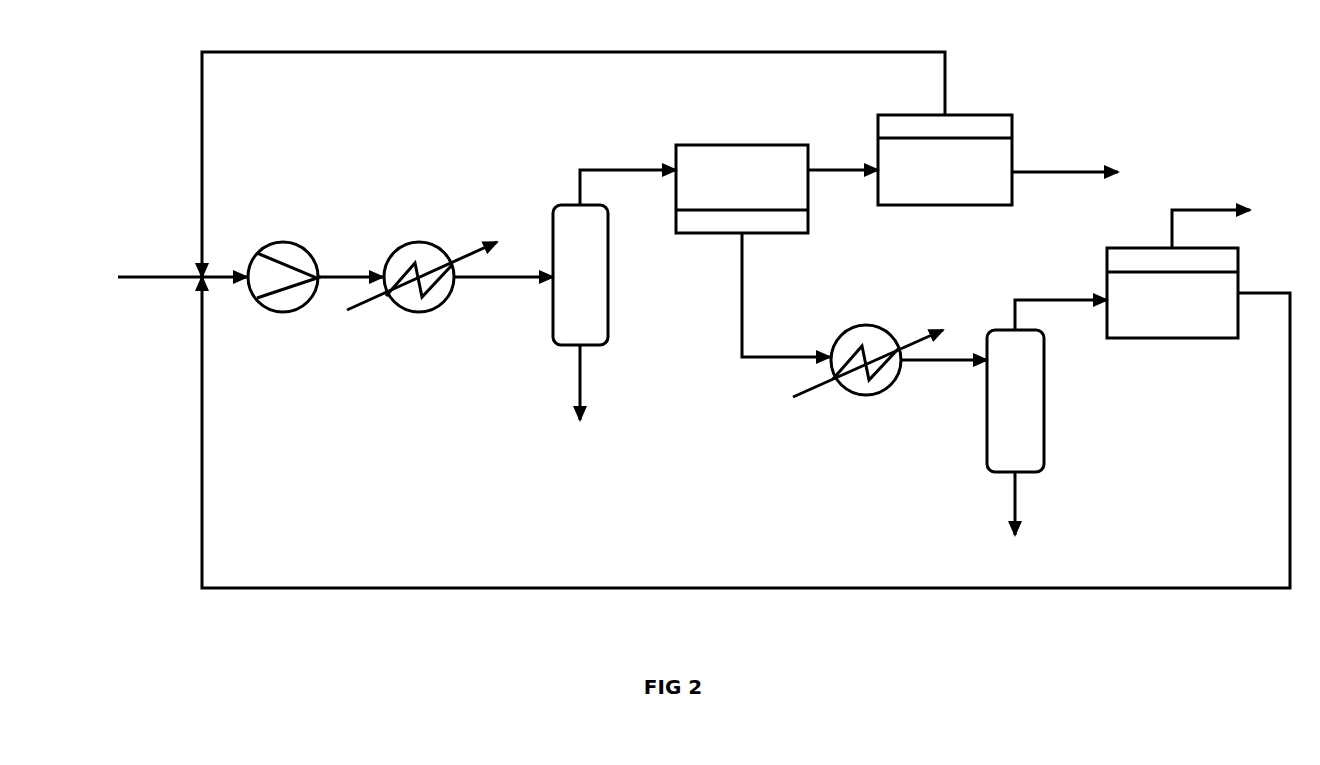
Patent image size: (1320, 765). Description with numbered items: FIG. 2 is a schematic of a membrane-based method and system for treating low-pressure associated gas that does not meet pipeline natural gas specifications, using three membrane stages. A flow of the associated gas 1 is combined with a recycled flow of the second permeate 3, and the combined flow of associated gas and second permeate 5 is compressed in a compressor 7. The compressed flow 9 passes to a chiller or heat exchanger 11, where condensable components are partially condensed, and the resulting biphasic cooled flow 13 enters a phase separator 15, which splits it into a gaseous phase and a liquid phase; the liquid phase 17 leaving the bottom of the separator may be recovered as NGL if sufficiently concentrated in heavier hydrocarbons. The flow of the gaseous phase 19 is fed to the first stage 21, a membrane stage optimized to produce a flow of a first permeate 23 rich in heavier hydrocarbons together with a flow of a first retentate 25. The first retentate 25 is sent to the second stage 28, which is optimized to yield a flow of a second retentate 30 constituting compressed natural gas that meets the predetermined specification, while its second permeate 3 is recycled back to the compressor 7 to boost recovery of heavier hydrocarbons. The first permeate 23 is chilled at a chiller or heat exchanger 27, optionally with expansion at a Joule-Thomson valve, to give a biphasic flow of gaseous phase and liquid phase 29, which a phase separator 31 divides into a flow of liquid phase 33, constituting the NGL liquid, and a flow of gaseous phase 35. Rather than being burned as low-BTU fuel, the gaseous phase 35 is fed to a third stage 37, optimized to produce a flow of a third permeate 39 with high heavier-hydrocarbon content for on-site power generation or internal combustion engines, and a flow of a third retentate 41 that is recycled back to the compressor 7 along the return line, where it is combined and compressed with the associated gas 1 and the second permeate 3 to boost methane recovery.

The flow of associated gas 1 is at (153, 277).
The flow of second permeate 3 is at (520, 52).
The combined flow of associated gas and second permeate 5 is at (223, 279).
The compressor 7 is at (290, 297).
The compressed flow 9 is at (350, 277).
The chiller or heat exchanger 11 is at (433, 290).
The biphasic cooled flow 13 is at (503, 278).
The phase separator 15 is at (583, 282).
The bottoms stream 17 is at (584, 378).
The flow of gaseous phase 19 is at (618, 170).
The first stage 21 is at (720, 173).
The flow of first permeate 23 is at (740, 318).
The flow of first retentate 25 is at (837, 165).
The chiller or heat exchanger 27 is at (860, 382).
The second stage 28 is at (947, 182).
The biphasic flow of gaseous phase and liquid phase 29 is at (937, 363).
The flow of second retentate 30 is at (1042, 172).
The phase separator 31 is at (1018, 397).
The flow of liquid phase 33 is at (1017, 500).
The flow of gaseous phase 35 is at (1060, 300).
The third stage 37 is at (1150, 323).
The flow of third permeate 39 is at (1200, 210).
The recycle line 41 is at (697, 588).